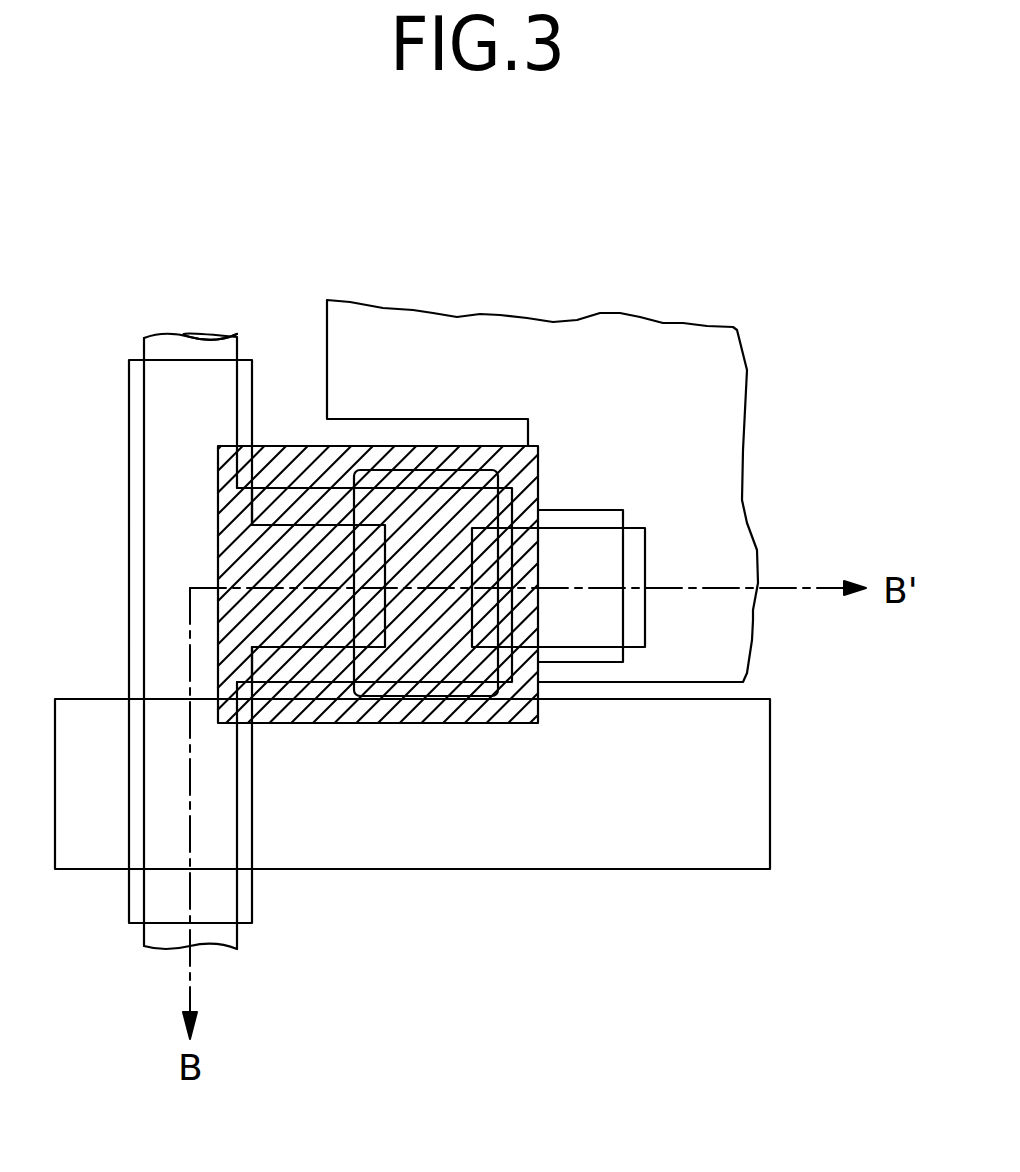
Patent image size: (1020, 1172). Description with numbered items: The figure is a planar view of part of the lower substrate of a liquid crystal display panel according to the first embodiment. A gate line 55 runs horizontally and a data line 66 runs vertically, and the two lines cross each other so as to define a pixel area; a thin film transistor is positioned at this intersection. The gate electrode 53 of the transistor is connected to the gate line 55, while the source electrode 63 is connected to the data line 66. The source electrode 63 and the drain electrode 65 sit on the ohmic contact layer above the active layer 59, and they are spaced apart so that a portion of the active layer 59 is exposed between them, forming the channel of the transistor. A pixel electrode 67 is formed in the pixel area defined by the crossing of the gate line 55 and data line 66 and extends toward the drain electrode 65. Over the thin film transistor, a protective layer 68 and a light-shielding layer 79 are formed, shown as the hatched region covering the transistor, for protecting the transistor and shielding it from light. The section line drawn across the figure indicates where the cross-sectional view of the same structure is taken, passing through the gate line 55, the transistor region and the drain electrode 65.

The gate electrode 53 is at (430, 470).
The gate line 55 is at (762, 790).
The active layer 59 is at (385, 658).
The source electrode 63 is at (290, 553).
The drain electrode 65 is at (590, 552).
The data line 66 is at (187, 387).
The pixel electrode 67 is at (712, 382).
The protective layer 68 is at (440, 723).
The light-shielding layer 79 is at (378, 693).